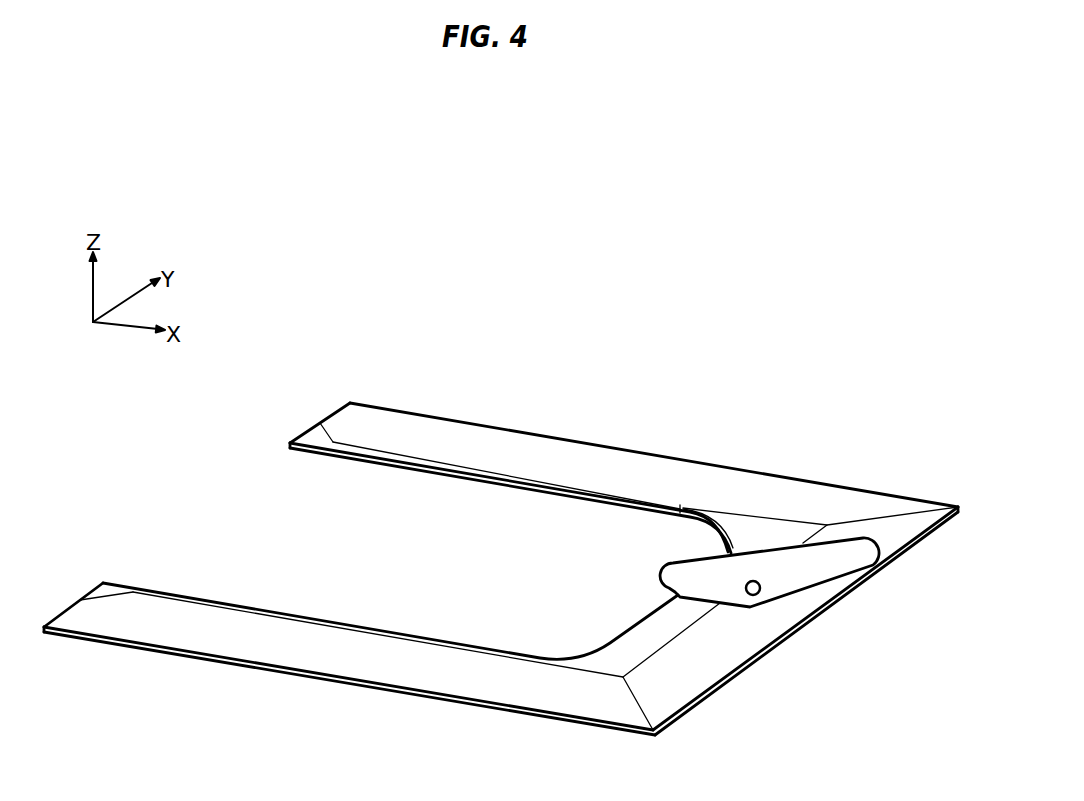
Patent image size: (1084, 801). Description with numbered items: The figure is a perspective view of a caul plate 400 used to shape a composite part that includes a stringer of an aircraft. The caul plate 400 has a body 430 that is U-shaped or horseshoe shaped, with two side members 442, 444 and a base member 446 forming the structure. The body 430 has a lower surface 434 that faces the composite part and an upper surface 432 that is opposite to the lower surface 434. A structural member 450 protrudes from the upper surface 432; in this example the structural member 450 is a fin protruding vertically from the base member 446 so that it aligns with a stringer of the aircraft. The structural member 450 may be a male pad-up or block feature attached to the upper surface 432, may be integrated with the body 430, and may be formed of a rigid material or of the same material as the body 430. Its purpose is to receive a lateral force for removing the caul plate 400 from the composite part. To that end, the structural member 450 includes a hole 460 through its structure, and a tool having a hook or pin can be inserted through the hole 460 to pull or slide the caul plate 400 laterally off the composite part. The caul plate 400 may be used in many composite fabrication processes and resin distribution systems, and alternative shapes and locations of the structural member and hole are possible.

The caul plate 400 is at (327, 309).
The body 430 is at (645, 462).
The upper surface 432 is at (556, 445).
The lower surface 434 is at (525, 500).
The side member 442 is at (470, 437).
The side member 444 is at (223, 618).
The base member 446 is at (693, 675).
The structural member 450 is at (848, 553).
The hole 460 is at (765, 588).